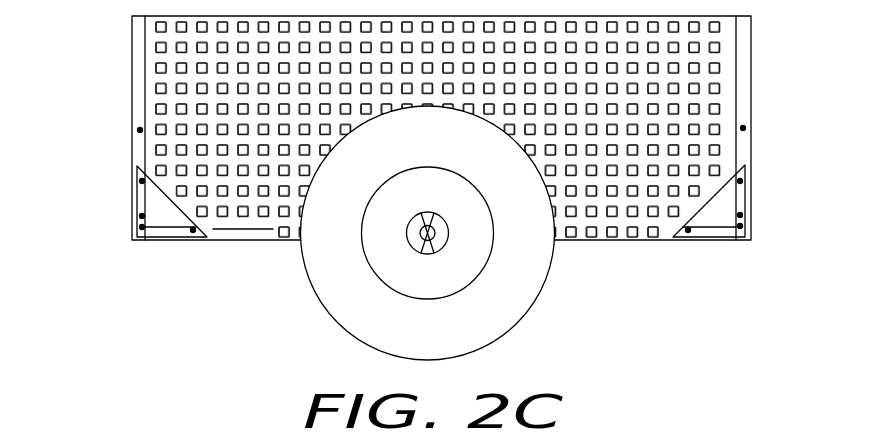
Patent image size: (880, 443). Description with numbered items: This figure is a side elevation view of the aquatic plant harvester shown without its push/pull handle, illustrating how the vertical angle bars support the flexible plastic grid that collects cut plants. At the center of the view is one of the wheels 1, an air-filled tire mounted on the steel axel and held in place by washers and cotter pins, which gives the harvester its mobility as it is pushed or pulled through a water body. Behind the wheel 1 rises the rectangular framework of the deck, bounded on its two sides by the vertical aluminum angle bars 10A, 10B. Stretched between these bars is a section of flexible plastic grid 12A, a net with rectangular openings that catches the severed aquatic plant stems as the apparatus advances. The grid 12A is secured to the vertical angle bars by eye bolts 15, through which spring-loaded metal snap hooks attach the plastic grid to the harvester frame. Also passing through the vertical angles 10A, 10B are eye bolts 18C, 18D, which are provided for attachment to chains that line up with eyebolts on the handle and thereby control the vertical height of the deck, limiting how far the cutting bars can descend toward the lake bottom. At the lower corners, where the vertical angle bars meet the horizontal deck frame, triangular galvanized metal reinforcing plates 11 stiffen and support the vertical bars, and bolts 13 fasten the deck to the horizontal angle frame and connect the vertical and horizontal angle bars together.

The wheels with air-filled tires 1 is at (522, 288).
The vertical aluminum angle bar 10A is at (745, 42).
The vertical aluminum angle bar 10B is at (140, 28).
The flexible plastic grid section 12A is at (695, 78).
The eye bolt 18C is at (743, 128).
The eye bolt 18D is at (140, 130).
The galvanized metal reinforcing plate 11 is at (157, 202).
The bolts 13 is at (142, 181).
The eye bolt 15 is at (142, 216).